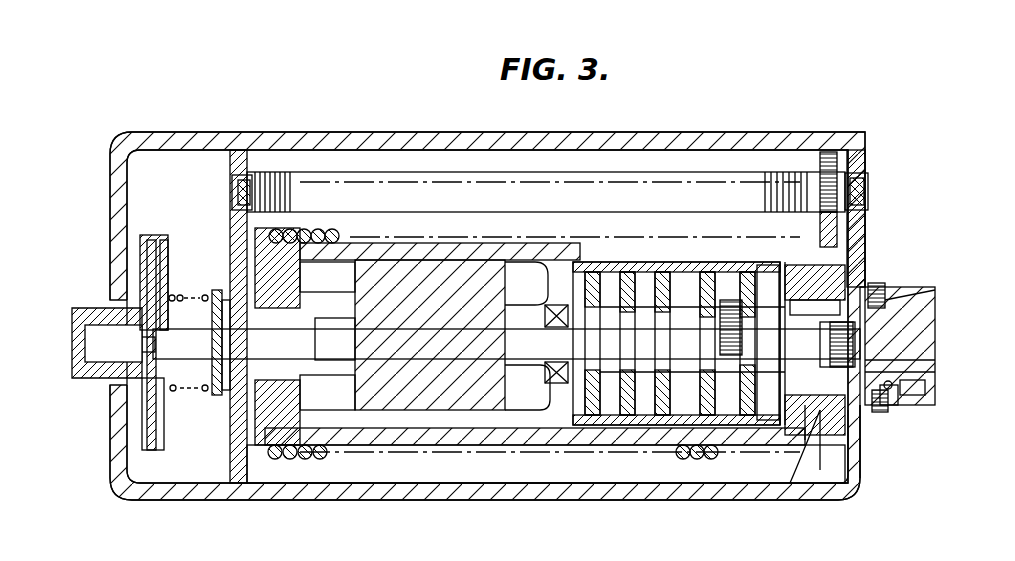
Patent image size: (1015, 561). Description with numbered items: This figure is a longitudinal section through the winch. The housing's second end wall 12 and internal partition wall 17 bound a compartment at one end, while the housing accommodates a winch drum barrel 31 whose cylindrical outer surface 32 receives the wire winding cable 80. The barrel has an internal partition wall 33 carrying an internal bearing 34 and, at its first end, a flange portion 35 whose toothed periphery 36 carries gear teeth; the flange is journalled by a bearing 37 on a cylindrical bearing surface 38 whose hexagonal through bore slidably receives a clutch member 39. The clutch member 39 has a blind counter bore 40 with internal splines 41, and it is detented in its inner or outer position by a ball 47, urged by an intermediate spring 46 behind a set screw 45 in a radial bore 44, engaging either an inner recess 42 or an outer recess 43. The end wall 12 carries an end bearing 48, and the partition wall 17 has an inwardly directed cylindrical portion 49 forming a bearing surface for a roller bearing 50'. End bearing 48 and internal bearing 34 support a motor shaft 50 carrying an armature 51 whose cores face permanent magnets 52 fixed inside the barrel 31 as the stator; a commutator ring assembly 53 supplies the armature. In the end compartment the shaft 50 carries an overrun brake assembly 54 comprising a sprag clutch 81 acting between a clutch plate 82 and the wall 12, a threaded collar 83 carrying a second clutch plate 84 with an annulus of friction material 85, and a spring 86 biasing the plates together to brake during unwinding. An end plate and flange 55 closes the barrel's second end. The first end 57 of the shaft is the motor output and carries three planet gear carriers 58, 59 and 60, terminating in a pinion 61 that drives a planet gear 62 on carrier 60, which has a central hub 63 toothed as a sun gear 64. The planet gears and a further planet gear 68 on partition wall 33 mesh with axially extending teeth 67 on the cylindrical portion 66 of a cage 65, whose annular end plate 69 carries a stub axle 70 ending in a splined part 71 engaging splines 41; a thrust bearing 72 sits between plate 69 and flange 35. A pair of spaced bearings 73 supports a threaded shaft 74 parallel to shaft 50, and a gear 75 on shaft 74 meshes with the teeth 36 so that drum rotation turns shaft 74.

The second end wall 12 is at (118, 185).
The internal partition wall 17 is at (238, 462).
The winch drum barrel 31 is at (610, 436).
The cylindrical outer surface 32 is at (495, 450).
The internal partition wall 33 is at (555, 402).
The internal bearing 34 is at (540, 372).
The flange portion 35 is at (812, 450).
The toothed periphery 36 is at (860, 482).
The bearing 37 is at (830, 275).
The cylindrical bearing surface 38 is at (848, 445).
The clutch member 39 is at (915, 285).
The central blind counter bore 40 is at (935, 302).
The splines 41 is at (860, 285).
The inner recess 42 is at (868, 372).
The outer recess 43 is at (900, 370).
The radial bore 44 is at (905, 400).
The set screw 45 is at (892, 395).
The intermediate spring 46 is at (862, 405).
The ball 47 is at (925, 392).
The end bearing 48 is at (115, 375).
The inwardly directed cylindrical portion 49 is at (298, 370).
The motor shaft 50 is at (550, 323).
The roller bearing 50' is at (243, 336).
The armature 51 is at (495, 318).
The permanent magnets 52 is at (385, 272).
The commutator ring assembly 53 is at (348, 310).
The overrun brake assembly 54 is at (150, 415).
The end plate and flange 55 is at (252, 415).
The first end of shaft 57 is at (580, 343).
The planet gear carrier 58 is at (628, 393).
The planet gear carrier 59 is at (640, 418).
The planet gear carrier 60 is at (708, 393).
The pinion 61 is at (725, 343).
The planet gear 62 is at (742, 285).
The central hub 63 is at (652, 368).
The sun gear 64 is at (690, 318).
The cylindrical cage 65 is at (750, 420).
The cylindrical portion 66 is at (675, 418).
The axially extending teeth 67 is at (726, 415).
The further planet gear 68 is at (560, 278).
The annular end plate 69 is at (782, 280).
The stub axle 70 is at (820, 357).
The splined part 71 is at (855, 355).
The thrust bearing 72 is at (805, 440).
The spaced bearings 73 is at (230, 168).
The threaded shaft 74 is at (645, 185).
The gear 75 is at (825, 160).
The wire winding cable 80 is at (325, 458).
The sprag clutch 81 is at (105, 308).
The clutch plate 82 is at (140, 240).
The threaded collar 83 is at (185, 296).
The second clutch plate 84 is at (172, 245).
The annulus of friction material 85 is at (152, 445).
The spring 86 is at (175, 390).